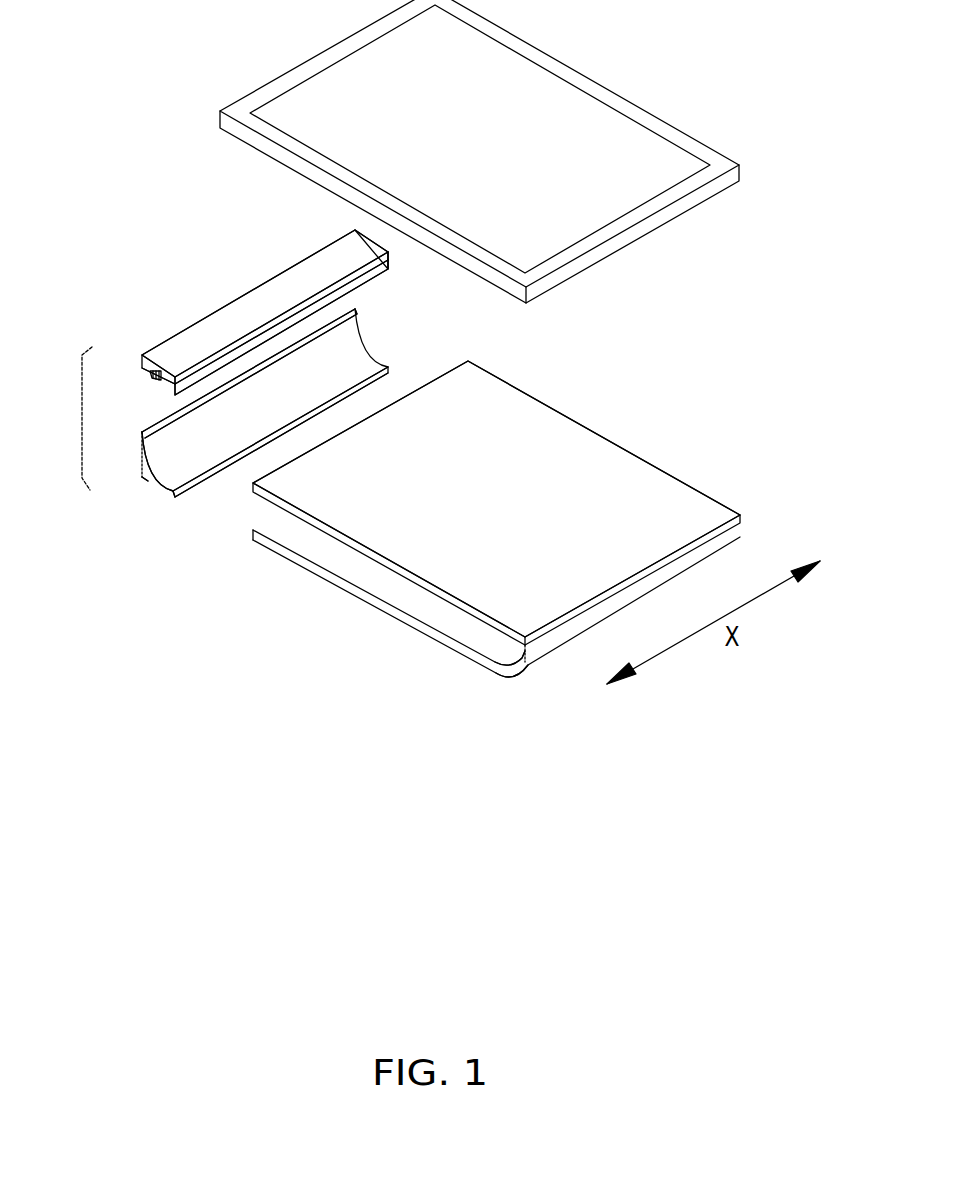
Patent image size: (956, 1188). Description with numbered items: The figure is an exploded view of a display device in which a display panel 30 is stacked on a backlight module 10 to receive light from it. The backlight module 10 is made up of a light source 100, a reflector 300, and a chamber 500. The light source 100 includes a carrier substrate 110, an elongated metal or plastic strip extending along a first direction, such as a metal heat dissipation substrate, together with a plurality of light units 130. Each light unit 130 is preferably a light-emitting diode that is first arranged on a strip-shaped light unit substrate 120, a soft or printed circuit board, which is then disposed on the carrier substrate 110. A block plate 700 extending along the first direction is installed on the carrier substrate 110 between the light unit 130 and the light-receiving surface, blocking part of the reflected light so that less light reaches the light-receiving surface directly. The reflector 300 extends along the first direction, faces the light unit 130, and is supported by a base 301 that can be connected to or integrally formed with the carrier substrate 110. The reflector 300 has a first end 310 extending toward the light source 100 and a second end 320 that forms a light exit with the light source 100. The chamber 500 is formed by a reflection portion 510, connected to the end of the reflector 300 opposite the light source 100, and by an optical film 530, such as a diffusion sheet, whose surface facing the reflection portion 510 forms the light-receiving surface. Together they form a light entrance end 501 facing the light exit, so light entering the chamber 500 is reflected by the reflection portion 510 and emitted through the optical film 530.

The display panel 30 is at (583, 118).
The backlight module 10 is at (218, 360).
The light source 100 is at (167, 252).
The carrier substrate 110 is at (233, 315).
The light unit substrate 120 is at (162, 385).
The light unit 130 is at (152, 374).
The block plate 700 is at (387, 268).
The reflector 300 is at (181, 458).
The base 301 is at (141, 478).
The first end 310 is at (149, 432).
The second end 320 is at (200, 480).
The chamber 500 is at (444, 745).
The light entrance end 501 is at (258, 512).
The reflection portion 510 is at (480, 640).
The optical film 530 is at (468, 583).